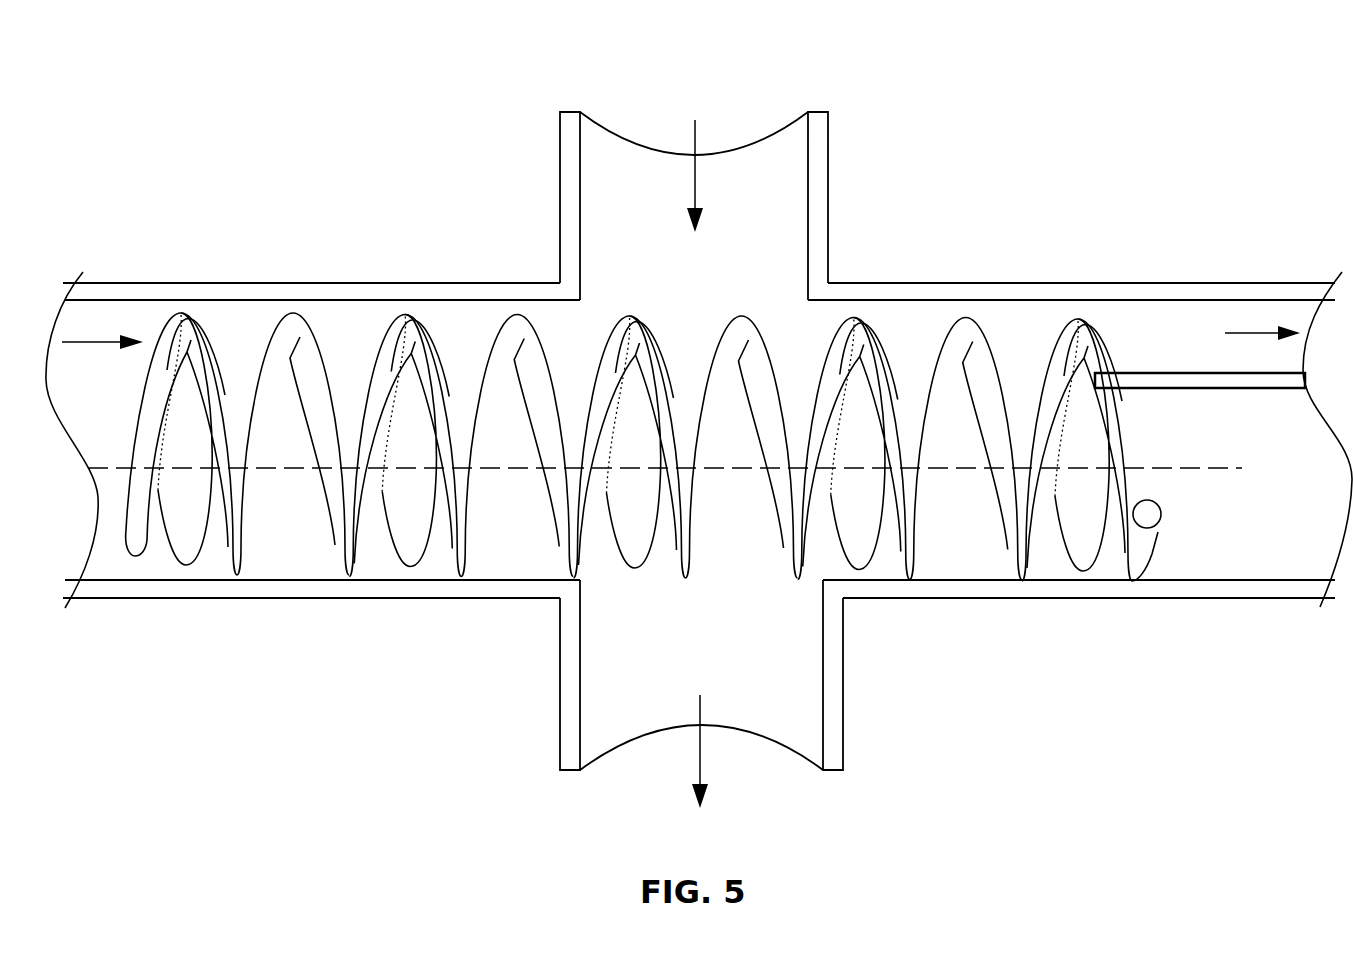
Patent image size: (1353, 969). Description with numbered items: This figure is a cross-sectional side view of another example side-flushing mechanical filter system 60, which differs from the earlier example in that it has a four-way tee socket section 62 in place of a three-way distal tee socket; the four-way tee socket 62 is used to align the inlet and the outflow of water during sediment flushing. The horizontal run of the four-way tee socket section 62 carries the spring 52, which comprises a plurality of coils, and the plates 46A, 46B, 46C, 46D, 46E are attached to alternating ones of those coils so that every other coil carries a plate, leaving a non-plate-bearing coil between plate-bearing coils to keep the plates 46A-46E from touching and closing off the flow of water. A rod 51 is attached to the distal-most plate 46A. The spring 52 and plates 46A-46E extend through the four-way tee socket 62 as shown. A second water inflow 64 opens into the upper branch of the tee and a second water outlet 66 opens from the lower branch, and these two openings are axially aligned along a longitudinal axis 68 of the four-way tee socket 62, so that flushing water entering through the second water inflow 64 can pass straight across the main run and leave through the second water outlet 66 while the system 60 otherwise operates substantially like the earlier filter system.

The plate 46A is at (1104, 408).
The plate 46B is at (881, 403).
The plate 46C is at (655, 407).
The plate 46D is at (435, 402).
The plate 46E is at (205, 401).
The rod 51 is at (1245, 390).
The spring 52 is at (343, 567).
The side-flushing mechanical filter system 60 is at (1034, 122).
The four-way tee socket section 62 is at (1033, 283).
The second water inflow 64 is at (765, 140).
The second water outlet 66 is at (637, 735).
The longitudinal axis 68 is at (1245, 470).